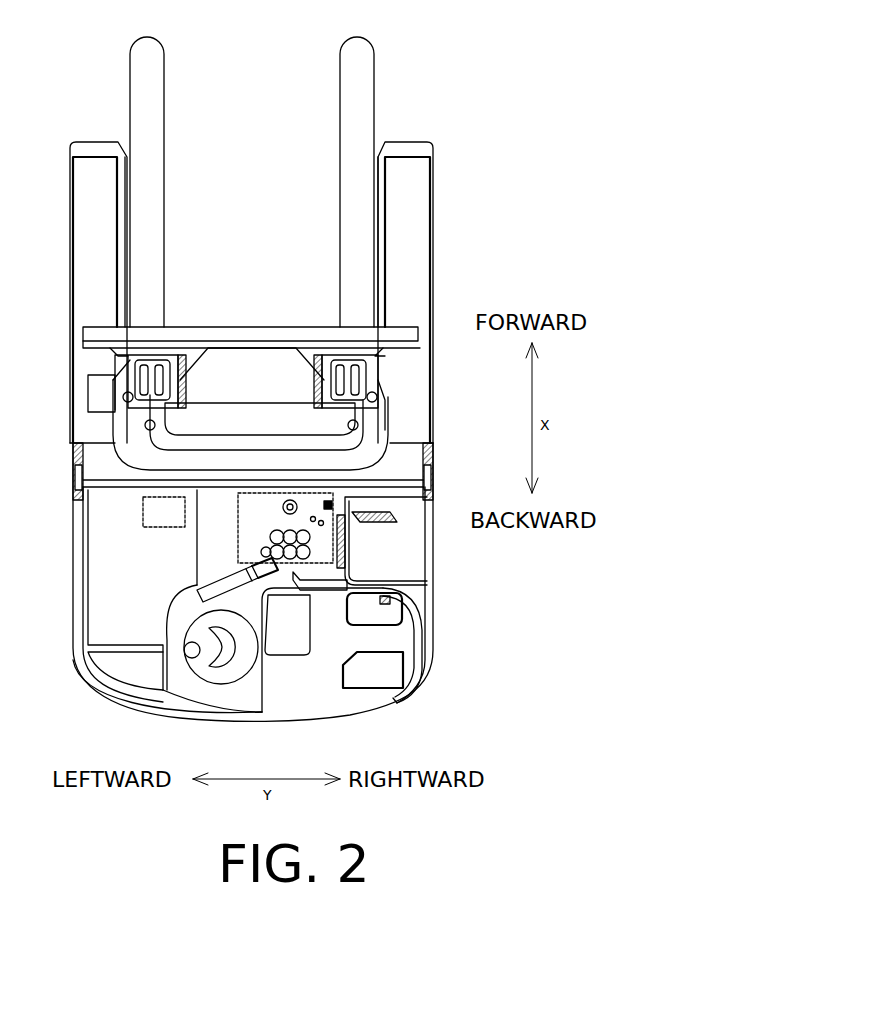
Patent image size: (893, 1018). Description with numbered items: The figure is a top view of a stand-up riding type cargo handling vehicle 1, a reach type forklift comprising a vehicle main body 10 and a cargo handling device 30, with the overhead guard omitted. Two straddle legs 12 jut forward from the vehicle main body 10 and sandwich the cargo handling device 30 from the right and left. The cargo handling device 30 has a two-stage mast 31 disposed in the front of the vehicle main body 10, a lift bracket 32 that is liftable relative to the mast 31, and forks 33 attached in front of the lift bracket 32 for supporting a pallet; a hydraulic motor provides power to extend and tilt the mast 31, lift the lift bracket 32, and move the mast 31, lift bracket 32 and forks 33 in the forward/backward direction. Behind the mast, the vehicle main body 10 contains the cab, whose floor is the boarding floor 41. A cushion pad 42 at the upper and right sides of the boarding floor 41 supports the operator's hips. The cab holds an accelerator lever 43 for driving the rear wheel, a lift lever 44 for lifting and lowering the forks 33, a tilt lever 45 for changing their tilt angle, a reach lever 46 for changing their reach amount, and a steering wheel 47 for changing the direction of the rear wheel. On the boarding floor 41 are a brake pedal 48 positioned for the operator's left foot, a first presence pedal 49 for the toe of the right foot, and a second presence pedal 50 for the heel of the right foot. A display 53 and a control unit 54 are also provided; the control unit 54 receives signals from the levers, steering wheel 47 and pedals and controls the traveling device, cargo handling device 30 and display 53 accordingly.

The cargo handling vehicle 1 is at (484, 48).
The vehicle main body 10 is at (73, 562).
The straddle legs 12 is at (72, 278).
The cargo handling device 30 is at (88, 386).
The mast 31 is at (390, 416).
The lift bracket 32 is at (256, 355).
The forks 33 is at (340, 48).
The boarding floor 41 is at (370, 714).
The cushion pad 42 is at (425, 667).
The accelerator lever 43 is at (347, 546).
The lift lever 44 is at (262, 553).
The tilt lever 45 is at (285, 541).
The reach lever 46 is at (272, 533).
The steering wheel 47 is at (185, 641).
The brake pedal 48 is at (285, 658).
The first presence pedal 49 is at (347, 612).
The second presence pedal 50 is at (352, 660).
The display 53 is at (207, 582).
The control unit 54 is at (143, 520).